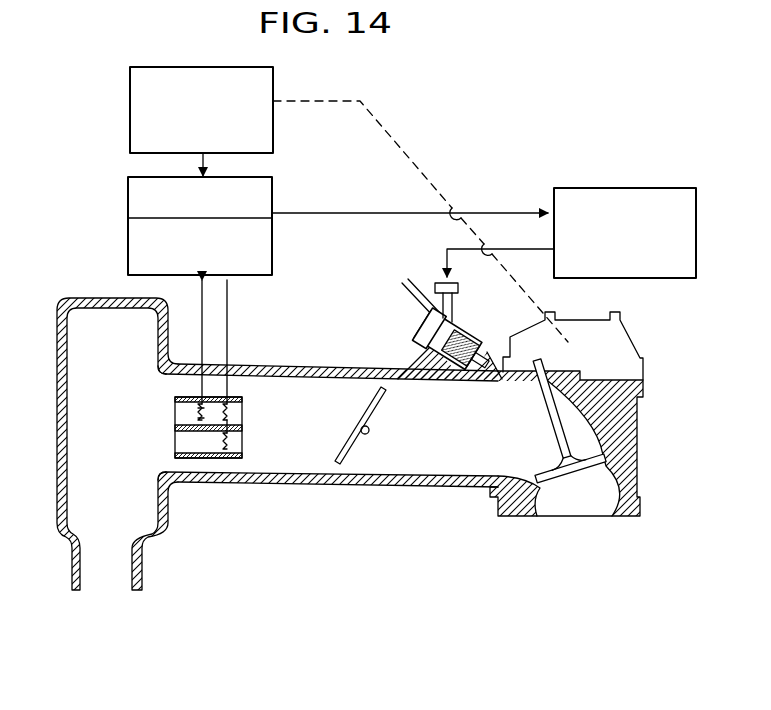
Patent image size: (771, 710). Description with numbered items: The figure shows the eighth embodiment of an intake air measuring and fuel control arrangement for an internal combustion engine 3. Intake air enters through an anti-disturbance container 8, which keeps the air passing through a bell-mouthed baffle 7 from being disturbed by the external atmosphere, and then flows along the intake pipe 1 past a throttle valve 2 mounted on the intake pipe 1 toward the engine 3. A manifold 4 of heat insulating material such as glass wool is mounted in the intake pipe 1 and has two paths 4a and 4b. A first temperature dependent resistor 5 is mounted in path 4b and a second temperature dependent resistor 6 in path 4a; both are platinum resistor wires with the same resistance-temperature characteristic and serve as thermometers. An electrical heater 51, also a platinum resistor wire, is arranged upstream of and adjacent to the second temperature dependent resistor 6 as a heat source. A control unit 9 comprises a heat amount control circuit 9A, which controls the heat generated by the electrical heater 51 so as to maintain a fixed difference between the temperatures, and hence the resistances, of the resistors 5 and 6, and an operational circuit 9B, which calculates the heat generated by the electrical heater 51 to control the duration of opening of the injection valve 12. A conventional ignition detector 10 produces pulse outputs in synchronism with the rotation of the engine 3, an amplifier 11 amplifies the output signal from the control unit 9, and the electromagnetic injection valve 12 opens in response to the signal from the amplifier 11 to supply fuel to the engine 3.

The intake pipe 1 is at (400, 466).
The throttle valve 2 is at (364, 410).
The internal combustion engine 3 is at (638, 423).
The manifold 4 is at (205, 398).
The path 4a is at (242, 418).
The path 4b is at (242, 446).
The first temperature dependent resistor 5 is at (231, 458).
The electrical heater 51 is at (192, 414).
The second temperature dependent resistor 6 is at (232, 413).
The baffle 7 is at (161, 380).
The anti-disturbance container 8 is at (74, 461).
The control unit 9 is at (317, 222).
The heat amount control circuit 9A is at (272, 253).
The operational circuit 9B is at (272, 200).
The ignition detector 10 is at (130, 96).
The amplifier 11 is at (553, 198).
The electromagnetic injection valve 12 is at (458, 306).